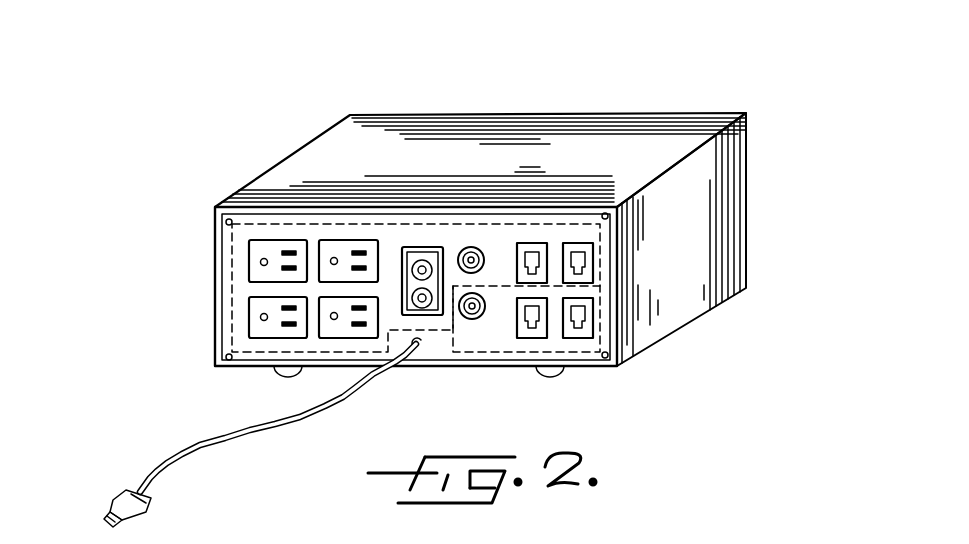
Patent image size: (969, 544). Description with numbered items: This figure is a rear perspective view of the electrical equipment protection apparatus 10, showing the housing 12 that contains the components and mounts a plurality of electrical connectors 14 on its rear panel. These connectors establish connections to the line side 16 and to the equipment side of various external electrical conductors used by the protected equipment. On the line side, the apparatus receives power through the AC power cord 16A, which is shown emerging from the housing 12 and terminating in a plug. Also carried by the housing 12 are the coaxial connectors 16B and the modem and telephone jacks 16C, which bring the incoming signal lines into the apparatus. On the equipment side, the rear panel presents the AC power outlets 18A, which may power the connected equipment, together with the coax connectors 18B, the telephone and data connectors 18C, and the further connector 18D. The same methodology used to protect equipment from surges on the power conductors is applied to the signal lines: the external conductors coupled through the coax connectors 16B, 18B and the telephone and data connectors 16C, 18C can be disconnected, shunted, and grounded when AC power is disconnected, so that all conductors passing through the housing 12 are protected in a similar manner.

The electrical equipment protection apparatus 10 is at (436, 264).
The housing 12 is at (723, 226).
The electrical connectors 14 is at (210, 290).
The line side 16 is at (497, 327).
The AC power cord 16A is at (121, 490).
The coaxial connectors 16B is at (462, 320).
The modem and telephone jacks 16C is at (542, 328).
The AC power outlets 18A is at (337, 250).
The coax connectors 18B is at (481, 248).
The telephone and data connectors 18C is at (533, 250).
The IEC power output connector 18D is at (413, 247).